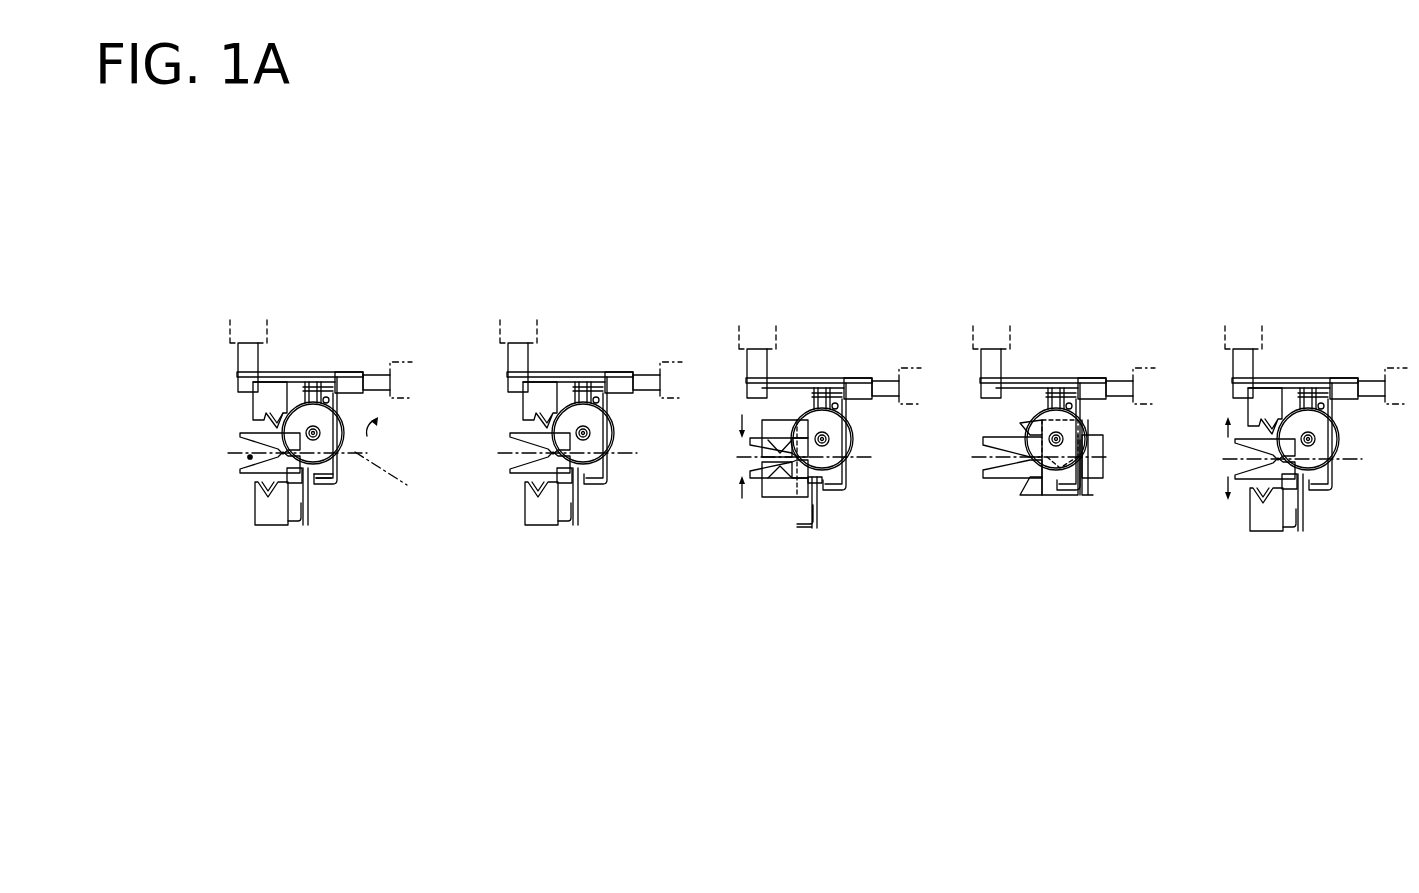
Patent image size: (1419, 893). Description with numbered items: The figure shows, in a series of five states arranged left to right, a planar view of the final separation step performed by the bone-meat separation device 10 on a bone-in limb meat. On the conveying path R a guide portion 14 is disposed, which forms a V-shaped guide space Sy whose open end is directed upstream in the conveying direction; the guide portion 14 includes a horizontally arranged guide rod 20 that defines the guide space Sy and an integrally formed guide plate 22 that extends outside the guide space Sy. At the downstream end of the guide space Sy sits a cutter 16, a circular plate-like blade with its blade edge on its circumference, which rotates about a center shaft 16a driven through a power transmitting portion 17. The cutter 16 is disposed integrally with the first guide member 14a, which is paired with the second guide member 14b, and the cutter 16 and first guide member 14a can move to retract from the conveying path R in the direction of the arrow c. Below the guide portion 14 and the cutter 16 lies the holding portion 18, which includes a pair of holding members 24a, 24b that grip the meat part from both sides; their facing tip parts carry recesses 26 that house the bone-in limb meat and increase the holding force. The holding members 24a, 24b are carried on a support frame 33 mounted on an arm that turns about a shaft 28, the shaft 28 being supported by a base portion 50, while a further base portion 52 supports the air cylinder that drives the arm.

The bone-meat separation device 10 is at (878, 250).
The guide portion 14 is at (215, 483).
The first guide member 14a is at (233, 427).
The second guide member 14b is at (239, 480).
The cutter 16 is at (317, 458).
The center shaft 16a is at (318, 438).
The power transmitting portion 17 is at (318, 427).
The holding portion 18 is at (315, 522).
The guide rod 20 is at (517, 442).
The guide plate 22 is at (527, 433).
The holding member 24a is at (272, 388).
The holding member 24b is at (272, 517).
The recess 26 is at (258, 423).
The shaft 28 is at (237, 358).
The support frame 33 is at (357, 456).
The base portion 50 is at (230, 340).
The base portion 52 is at (404, 360).
The guide space Sy is at (247, 458).
The retracting direction c is at (375, 432).
The conveying path R is at (392, 479).